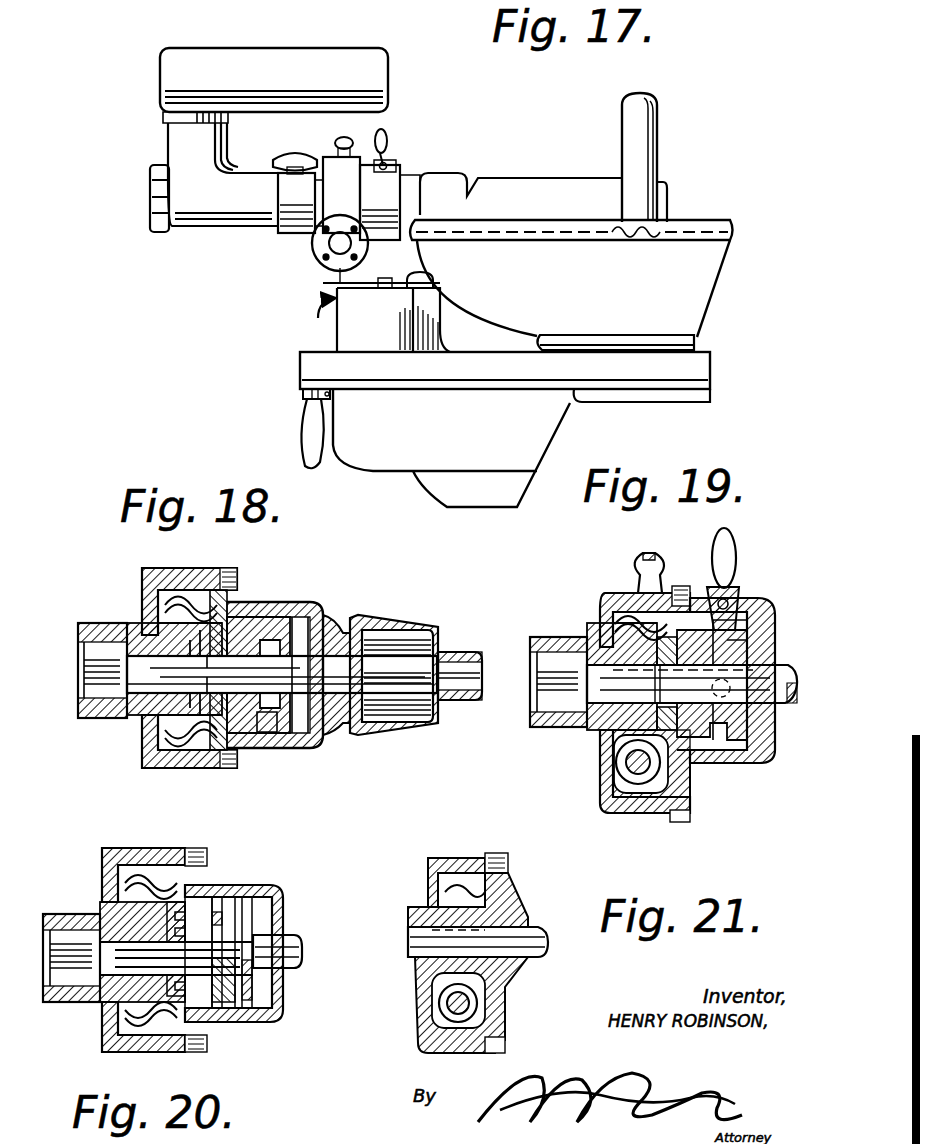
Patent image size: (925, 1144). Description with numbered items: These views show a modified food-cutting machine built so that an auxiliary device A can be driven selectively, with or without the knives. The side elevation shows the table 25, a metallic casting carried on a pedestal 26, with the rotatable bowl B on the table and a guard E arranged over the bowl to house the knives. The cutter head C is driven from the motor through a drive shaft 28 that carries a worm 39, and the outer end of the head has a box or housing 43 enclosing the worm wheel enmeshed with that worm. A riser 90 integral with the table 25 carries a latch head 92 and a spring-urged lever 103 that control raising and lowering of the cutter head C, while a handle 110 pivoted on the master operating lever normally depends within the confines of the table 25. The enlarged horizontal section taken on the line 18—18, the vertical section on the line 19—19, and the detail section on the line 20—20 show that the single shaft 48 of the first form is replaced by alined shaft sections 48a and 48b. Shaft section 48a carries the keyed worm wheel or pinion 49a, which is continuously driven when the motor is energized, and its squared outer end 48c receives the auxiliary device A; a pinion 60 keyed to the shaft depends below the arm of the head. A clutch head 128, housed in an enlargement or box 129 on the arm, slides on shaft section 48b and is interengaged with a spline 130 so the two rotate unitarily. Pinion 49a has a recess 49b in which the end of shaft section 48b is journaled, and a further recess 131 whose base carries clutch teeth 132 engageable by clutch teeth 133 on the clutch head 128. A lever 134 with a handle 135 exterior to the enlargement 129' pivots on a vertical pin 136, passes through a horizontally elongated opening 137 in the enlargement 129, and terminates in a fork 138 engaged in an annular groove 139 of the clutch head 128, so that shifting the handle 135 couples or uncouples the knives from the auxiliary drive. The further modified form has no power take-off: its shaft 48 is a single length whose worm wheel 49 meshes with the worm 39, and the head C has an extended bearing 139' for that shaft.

In FIG. 17, the auxiliary device A is at (256, 49).
In FIG. 17, the bowl B is at (571, 278).
In FIG. 17, the cutter head C is at (456, 194).
In FIG. 18, the cutter head C is at (402, 620).
In FIG. 17, the guard E is at (660, 184).
In FIG. 17, the section line 18 is at (262, 170).
In FIG. 18, the section line 19 is at (74, 668).
In FIG. 19, the section line 20 is at (523, 667).
In FIG. 17, the table 25 is at (536, 385).
In FIG. 17, the pedestal 26 is at (451, 448).
In FIG. 19, the drive shaft 28 is at (640, 778).
In FIG. 21, the drive shaft 28 is at (447, 1010).
In FIG. 19, the worm 39 is at (630, 788).
In FIG. 21, the worm 39 is at (480, 1007).
In FIG. 21, the housing 43 is at (457, 860).
In FIG. 21, the rotatable shaft 48 is at (530, 938).
In FIG. 18, the shaft section 48a is at (132, 697).
In FIG. 19, the shaft section 48a is at (590, 690).
In FIG. 20, the shaft section 48a is at (102, 906).
In FIG. 18, the shaft section 48b is at (331, 664).
In FIG. 19, the shaft section 48b is at (738, 681).
In FIG. 20, the shaft section 48b is at (300, 950).
In FIG. 18, the squared end 48c is at (93, 661).
In FIG. 19, the squared end 48c is at (546, 673).
In FIG. 20, the squared end 48c is at (62, 975).
In FIG. 21, the worm wheel 49 is at (440, 884).
In FIG. 18, the worm wheel 49a is at (186, 602).
In FIG. 19, the worm wheel 49a is at (627, 640).
In FIG. 20, the worm wheel 49a is at (158, 884).
In FIG. 18, the recess 49b is at (236, 620).
In FIG. 19, the recess 49b is at (663, 714).
In FIG. 18, the pinion 60 is at (414, 650).
In FIG. 17, the riser 90 is at (442, 323).
In FIG. 17, the latch head 92 is at (436, 283).
In FIG. 17, the lever 103 is at (315, 302).
In FIG. 17, the handle 110 is at (308, 443).
In FIG. 18, the clutch head 128 is at (262, 620).
In FIG. 20, the clutch head 128 is at (214, 1023).
In FIG. 17, the enlargement 129 is at (387, 217).
In FIG. 18, the enlargement 129 is at (302, 657).
In FIG. 20, the enlargement 129 is at (257, 943).
In FIG. 17, the enlargement 129' is at (428, 183).
In FIG. 19, the enlargement 129' is at (746, 680).
In FIG. 18, the spline 130 is at (330, 728).
In FIG. 19, the spline 130 is at (760, 654).
In FIG. 18, the recess 131 is at (204, 712).
In FIG. 19, the recess 131 is at (657, 760).
In FIG. 18, the clutch teeth 132 is at (186, 624).
In FIG. 19, the clutch teeth 132 is at (624, 604).
In FIG. 18, the clutch teeth 133 is at (212, 748).
In FIG. 19, the clutch teeth 133 is at (690, 785).
In FIG. 20, the clutch teeth 133 is at (214, 906).
In FIG. 17, the lever 134 is at (390, 143).
In FIG. 19, the lever 134 is at (745, 562).
In FIG. 19, the handle 135 is at (740, 593).
In FIG. 17, the vertical pin 136 is at (392, 162).
In FIG. 19, the vertical pin 136 is at (745, 610).
In FIG. 19, the elongated opening 137 is at (705, 618).
In FIG. 18, the fork 138 is at (266, 734).
In FIG. 19, the fork 138 is at (770, 722).
In FIG. 20, the fork 138 is at (255, 917).
In FIG. 18, the annular groove 139 is at (325, 703).
In FIG. 19, the annular groove 139 is at (740, 707).
In FIG. 20, the annular groove 139 is at (296, 952).
In FIG. 21, the extended bearing 139' is at (447, 900).